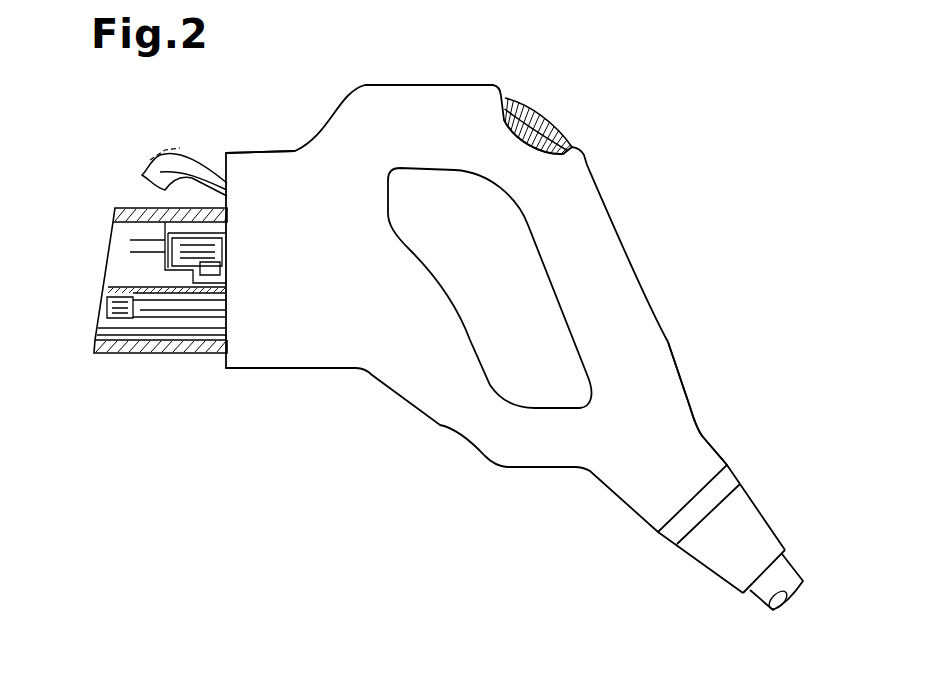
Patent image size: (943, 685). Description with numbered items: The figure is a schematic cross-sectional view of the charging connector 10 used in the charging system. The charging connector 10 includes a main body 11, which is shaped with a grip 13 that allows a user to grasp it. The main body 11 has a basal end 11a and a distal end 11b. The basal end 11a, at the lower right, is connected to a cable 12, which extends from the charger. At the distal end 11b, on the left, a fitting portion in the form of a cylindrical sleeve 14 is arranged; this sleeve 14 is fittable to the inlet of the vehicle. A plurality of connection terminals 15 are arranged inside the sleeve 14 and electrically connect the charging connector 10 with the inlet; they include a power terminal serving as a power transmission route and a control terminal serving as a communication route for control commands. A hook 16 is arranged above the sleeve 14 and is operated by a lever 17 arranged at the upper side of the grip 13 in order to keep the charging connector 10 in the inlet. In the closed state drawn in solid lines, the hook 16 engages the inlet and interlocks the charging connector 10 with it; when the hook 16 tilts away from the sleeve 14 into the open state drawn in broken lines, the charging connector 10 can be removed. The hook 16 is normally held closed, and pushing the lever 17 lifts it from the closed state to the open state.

The charging connector 10 is at (684, 133).
The main body 11 is at (627, 247).
The basal end 11a is at (703, 432).
The distal end 11b is at (240, 152).
The cable 12 is at (800, 570).
The grip 13 is at (556, 303).
The cylindrical sleeve 14 is at (131, 208).
The connection terminals 15 is at (105, 262).
The hook 16 is at (148, 162).
The lever 17 is at (513, 91).